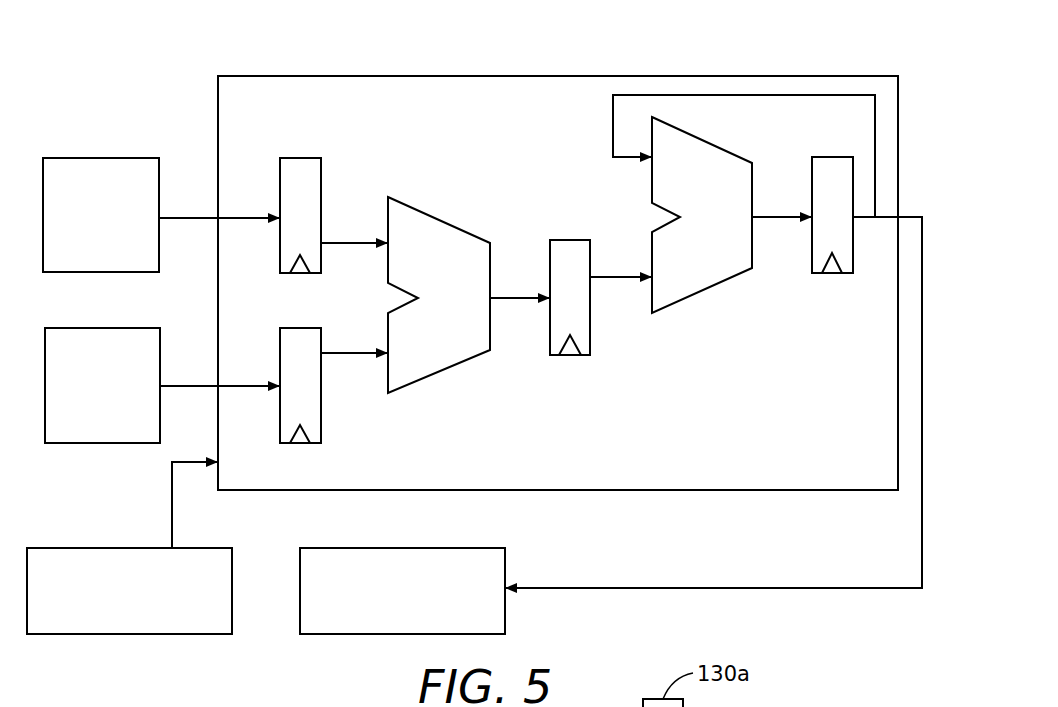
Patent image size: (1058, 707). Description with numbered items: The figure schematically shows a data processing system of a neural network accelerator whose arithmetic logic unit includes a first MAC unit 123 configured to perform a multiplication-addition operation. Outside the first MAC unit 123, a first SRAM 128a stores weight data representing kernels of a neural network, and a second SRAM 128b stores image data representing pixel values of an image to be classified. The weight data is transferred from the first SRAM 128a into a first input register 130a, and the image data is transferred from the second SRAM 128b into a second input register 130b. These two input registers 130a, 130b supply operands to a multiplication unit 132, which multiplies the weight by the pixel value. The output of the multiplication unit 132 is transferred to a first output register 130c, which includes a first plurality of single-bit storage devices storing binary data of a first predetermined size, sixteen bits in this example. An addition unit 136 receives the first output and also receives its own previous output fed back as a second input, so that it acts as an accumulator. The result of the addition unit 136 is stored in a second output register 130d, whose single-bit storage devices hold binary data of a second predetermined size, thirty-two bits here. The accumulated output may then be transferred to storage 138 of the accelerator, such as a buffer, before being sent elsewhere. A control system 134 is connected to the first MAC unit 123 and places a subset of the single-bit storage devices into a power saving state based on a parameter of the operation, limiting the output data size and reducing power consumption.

The first MAC unit 123 is at (275, 76).
The first SRAM 128a is at (82, 158).
The second SRAM 128b is at (82, 328).
The first input register 130a is at (300, 158).
The second input register 130b is at (300, 443).
The first output register 130c is at (568, 240).
The second output register 130d is at (832, 273).
The multiplication unit 132 is at (450, 225).
The control system 134 is at (60, 548).
The addition unit 136 is at (718, 147).
The storage 138 is at (365, 548).